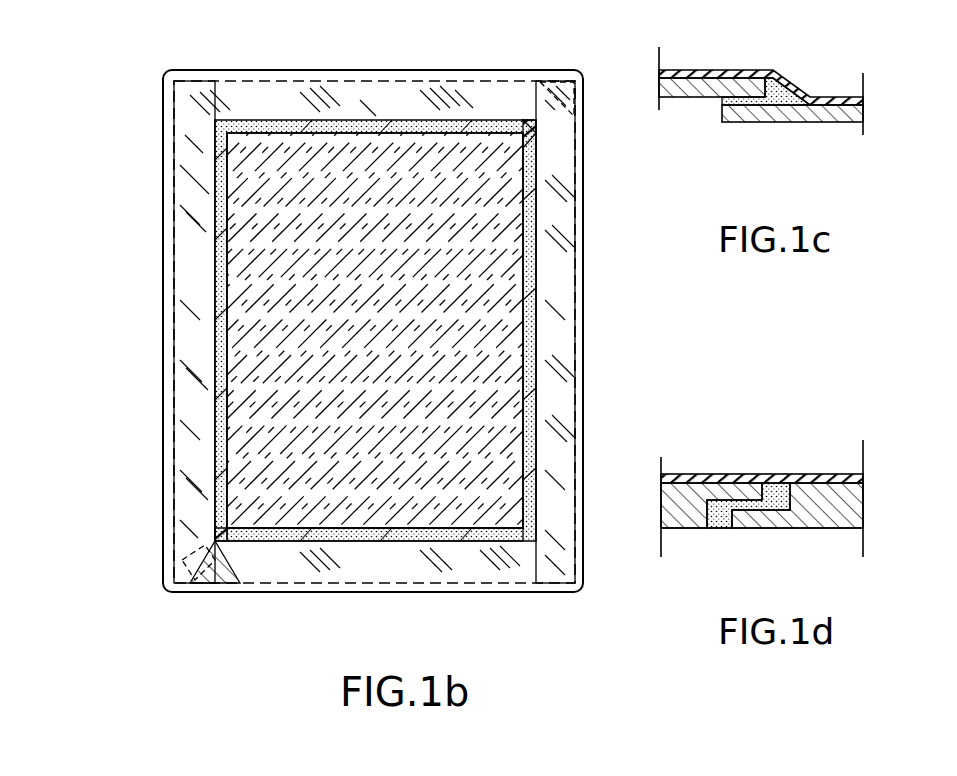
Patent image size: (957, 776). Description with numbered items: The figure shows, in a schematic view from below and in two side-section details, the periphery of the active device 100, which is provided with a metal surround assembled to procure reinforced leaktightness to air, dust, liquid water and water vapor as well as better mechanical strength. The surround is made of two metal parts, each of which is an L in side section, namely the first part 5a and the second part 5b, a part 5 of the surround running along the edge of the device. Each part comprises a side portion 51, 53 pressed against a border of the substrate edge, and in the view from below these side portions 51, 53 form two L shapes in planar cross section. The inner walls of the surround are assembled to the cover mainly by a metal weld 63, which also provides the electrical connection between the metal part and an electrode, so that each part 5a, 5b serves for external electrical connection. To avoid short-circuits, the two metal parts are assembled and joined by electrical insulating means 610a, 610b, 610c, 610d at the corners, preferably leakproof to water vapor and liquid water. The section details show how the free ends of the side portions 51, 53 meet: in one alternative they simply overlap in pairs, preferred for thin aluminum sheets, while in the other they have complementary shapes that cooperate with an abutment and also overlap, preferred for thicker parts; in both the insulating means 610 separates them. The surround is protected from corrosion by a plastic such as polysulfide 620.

In FIG. 1b, the active device 100 is at (148, 94).
In FIG. 1b, the surround part 5 is at (168, 170).
In FIG. 1b, the first part of the surround 5a is at (190, 262).
In FIG. 1b, the second part of the surround 5b is at (558, 290).
In FIG. 1c, the side portion 51 is at (701, 77).
In FIG. 1d, the side portion 51 is at (694, 506).
In FIG. 1c, the side portion 53 is at (822, 123).
In FIG. 1d, the side portion 53 is at (820, 500).
In FIG. 1b, the weld 63 is at (218, 318).
In FIG. 1c, the electrical insulating means 610 is at (778, 102).
In FIG. 1d, the electrical insulating means 610 is at (778, 512).
In FIG. 1b, the electrical insulating means 610a is at (530, 140).
In FIG. 1b, the electrical insulating means 610b is at (194, 566).
In FIG. 1b, the electrical insulating means 610c is at (236, 545).
In FIG. 1b, the electrical insulating means 610d is at (553, 84).
In FIG. 1b, the polysulfide 620 is at (287, 100).
In FIG. 1c, the polysulfide 620 is at (800, 90).
In FIG. 1d, the polysulfide 620 is at (712, 480).